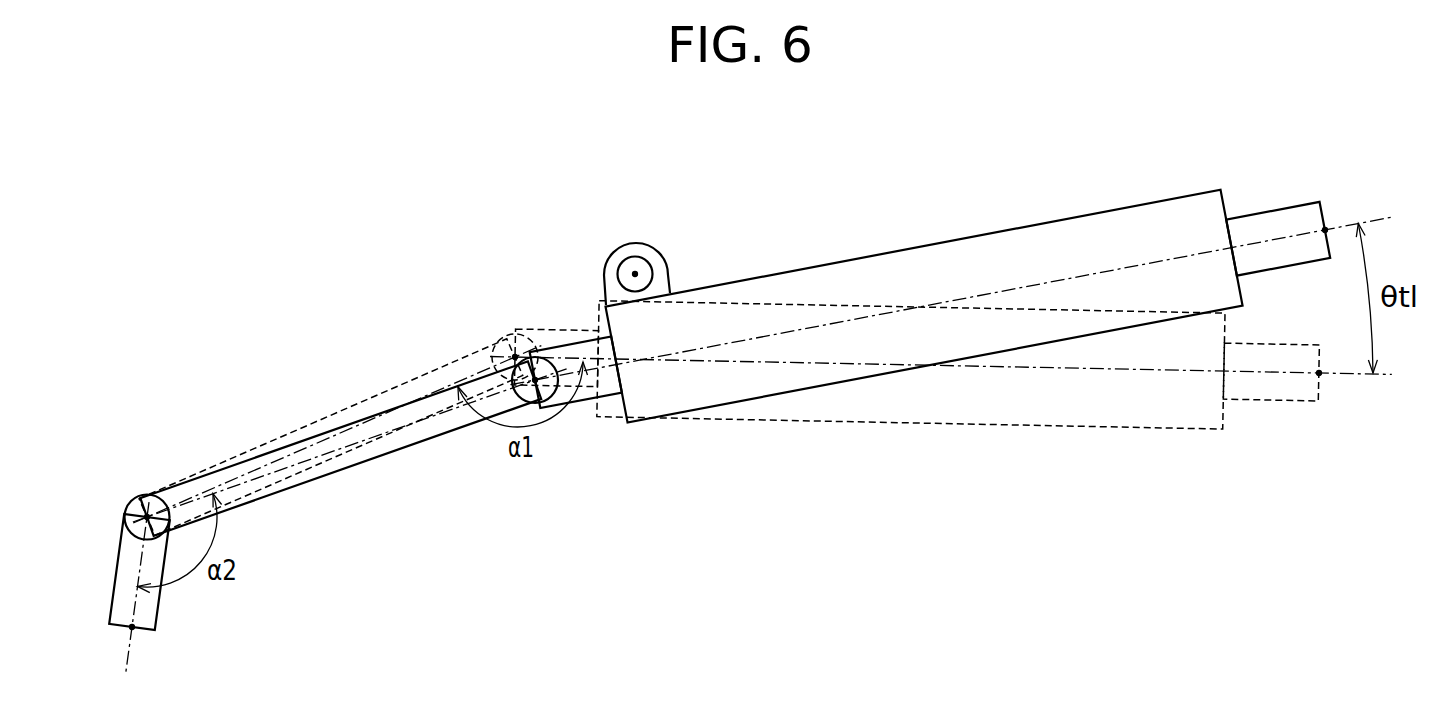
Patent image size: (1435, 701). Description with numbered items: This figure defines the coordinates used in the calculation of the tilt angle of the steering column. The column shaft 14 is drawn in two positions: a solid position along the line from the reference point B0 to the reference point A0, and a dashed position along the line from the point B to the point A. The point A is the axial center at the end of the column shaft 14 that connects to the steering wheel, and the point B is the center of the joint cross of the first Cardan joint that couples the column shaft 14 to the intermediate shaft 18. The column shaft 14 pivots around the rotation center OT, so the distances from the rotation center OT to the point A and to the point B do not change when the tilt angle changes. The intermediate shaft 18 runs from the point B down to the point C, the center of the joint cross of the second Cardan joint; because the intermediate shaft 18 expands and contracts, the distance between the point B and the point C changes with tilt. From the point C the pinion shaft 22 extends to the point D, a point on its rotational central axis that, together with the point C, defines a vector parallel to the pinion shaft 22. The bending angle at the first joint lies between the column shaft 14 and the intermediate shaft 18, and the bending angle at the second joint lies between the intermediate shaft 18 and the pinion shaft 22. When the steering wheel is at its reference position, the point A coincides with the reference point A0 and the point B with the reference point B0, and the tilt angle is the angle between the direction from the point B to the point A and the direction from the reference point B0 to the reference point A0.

The column shaft 14 is at (1112, 210).
The intermediate shaft 18 is at (309, 412).
The pinion shaft 22 is at (116, 570).
The rotation center OT is at (635, 273).
The reference point B0 is at (537, 378).
The point B is at (515, 357).
The point C is at (147, 517).
The point D is at (132, 627).
The point A is at (1319, 373).
The reference point A0 is at (1325, 230).